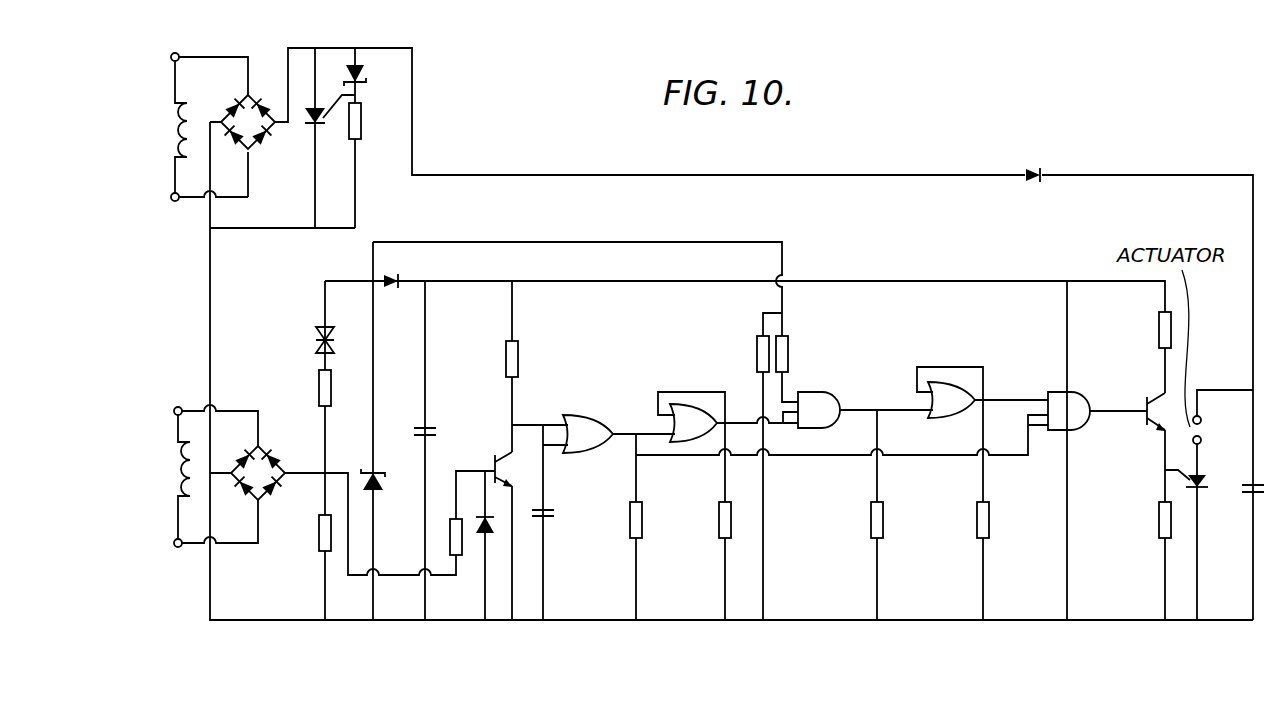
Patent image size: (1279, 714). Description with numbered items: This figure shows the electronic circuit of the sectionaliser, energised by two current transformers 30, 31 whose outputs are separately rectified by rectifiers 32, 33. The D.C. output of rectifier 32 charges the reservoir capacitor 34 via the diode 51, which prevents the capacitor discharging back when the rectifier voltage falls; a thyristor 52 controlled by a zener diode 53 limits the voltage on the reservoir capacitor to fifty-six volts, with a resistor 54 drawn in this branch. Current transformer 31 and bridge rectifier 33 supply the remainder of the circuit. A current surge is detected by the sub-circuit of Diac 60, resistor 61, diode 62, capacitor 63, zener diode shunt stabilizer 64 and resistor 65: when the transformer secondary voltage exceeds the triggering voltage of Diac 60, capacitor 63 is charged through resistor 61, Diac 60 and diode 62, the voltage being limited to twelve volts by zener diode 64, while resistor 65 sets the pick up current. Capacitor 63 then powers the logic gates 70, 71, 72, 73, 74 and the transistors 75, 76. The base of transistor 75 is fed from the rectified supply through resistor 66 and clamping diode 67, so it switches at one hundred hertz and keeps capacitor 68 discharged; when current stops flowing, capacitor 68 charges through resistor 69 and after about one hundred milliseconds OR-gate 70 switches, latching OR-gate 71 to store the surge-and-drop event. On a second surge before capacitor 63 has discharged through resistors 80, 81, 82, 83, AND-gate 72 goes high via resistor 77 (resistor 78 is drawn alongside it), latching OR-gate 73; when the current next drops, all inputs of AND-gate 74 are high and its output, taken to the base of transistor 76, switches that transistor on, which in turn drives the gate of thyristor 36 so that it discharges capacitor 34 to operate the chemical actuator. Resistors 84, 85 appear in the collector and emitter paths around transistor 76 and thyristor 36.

The current transformer 30 is at (163, 127).
The current transformer 31 is at (166, 477).
The rectifier 32 is at (240, 112).
The bridge rectifier 33 is at (254, 462).
The reservoir capacitor 34 is at (1260, 473).
The thyristor 36 is at (1209, 467).
The diode 51 is at (1037, 158).
The thyristor 52 is at (310, 121).
The zener diode 53 is at (366, 70).
The resistor 54 is at (370, 121).
The Diac 60 is at (307, 337).
The resistor 61 is at (306, 388).
The diode 62 is at (399, 267).
The capacitor 63 is at (414, 419).
The zener diode shunt stabilizer 64 is at (384, 469).
The resistor 65 is at (306, 533).
The resistor 66 is at (450, 533).
The clamping diode 67 is at (480, 514).
The capacitor 68 is at (551, 525).
The resistor 69 is at (494, 359).
The OR-gate 70 is at (588, 443).
The OR-gate 71 is at (693, 417).
The AND-gate 72 is at (820, 394).
The OR-gate 73 is at (947, 387).
The AND-gate 74 is at (1058, 393).
The transistor 75 is at (499, 458).
The transistor 76 is at (1143, 398).
The resistor 77 is at (800, 348).
The resistor 78 is at (748, 351).
The resistor 80 is at (620, 520).
The resistor 81 is at (708, 520).
The resistor 82 is at (860, 520).
The resistor 83 is at (965, 520).
The resistor 84 is at (1146, 520).
The resistor 85 is at (1147, 330).